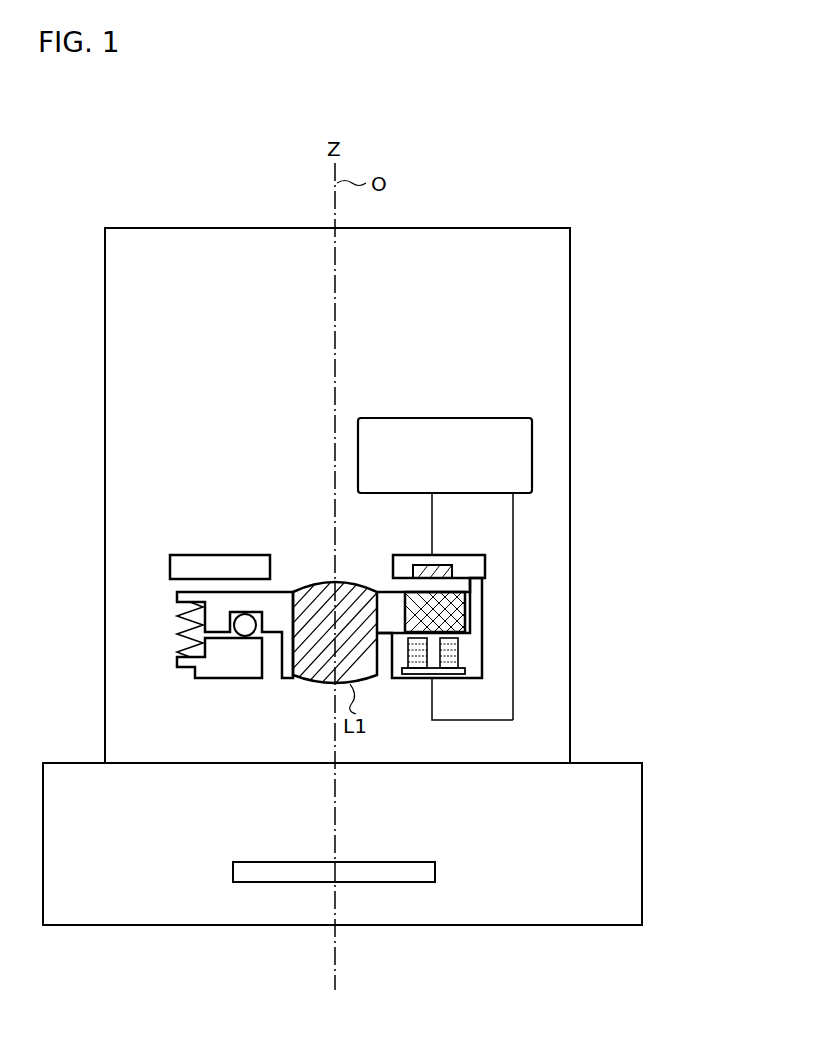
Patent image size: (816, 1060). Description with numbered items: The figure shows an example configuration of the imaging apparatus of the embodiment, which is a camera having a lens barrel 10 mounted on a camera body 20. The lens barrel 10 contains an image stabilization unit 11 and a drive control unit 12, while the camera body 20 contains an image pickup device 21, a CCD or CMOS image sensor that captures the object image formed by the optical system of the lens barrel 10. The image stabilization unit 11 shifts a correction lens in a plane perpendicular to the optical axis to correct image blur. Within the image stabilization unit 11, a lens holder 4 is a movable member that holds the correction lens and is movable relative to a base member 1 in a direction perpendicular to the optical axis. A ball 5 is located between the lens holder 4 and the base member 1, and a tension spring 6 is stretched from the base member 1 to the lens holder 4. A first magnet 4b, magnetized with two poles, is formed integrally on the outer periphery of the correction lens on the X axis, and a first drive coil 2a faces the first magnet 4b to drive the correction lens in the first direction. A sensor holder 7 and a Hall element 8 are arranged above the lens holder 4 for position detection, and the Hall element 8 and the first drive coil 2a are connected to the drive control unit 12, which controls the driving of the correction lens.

The base member 1 is at (203, 679).
The first drive coil 2a is at (441, 680).
The lens holder 4 is at (292, 591).
The first magnet 4b is at (470, 612).
The ball 5 is at (238, 636).
The tension spring 6 is at (195, 613).
The sensor holder 7 is at (218, 555).
The Hall element 8 is at (430, 564).
The lens barrel 10 is at (570, 440).
The image stabilization unit 11 is at (540, 648).
The drive control unit 12 is at (412, 418).
The camera body 20 is at (642, 810).
The image pickup device 21 is at (418, 861).